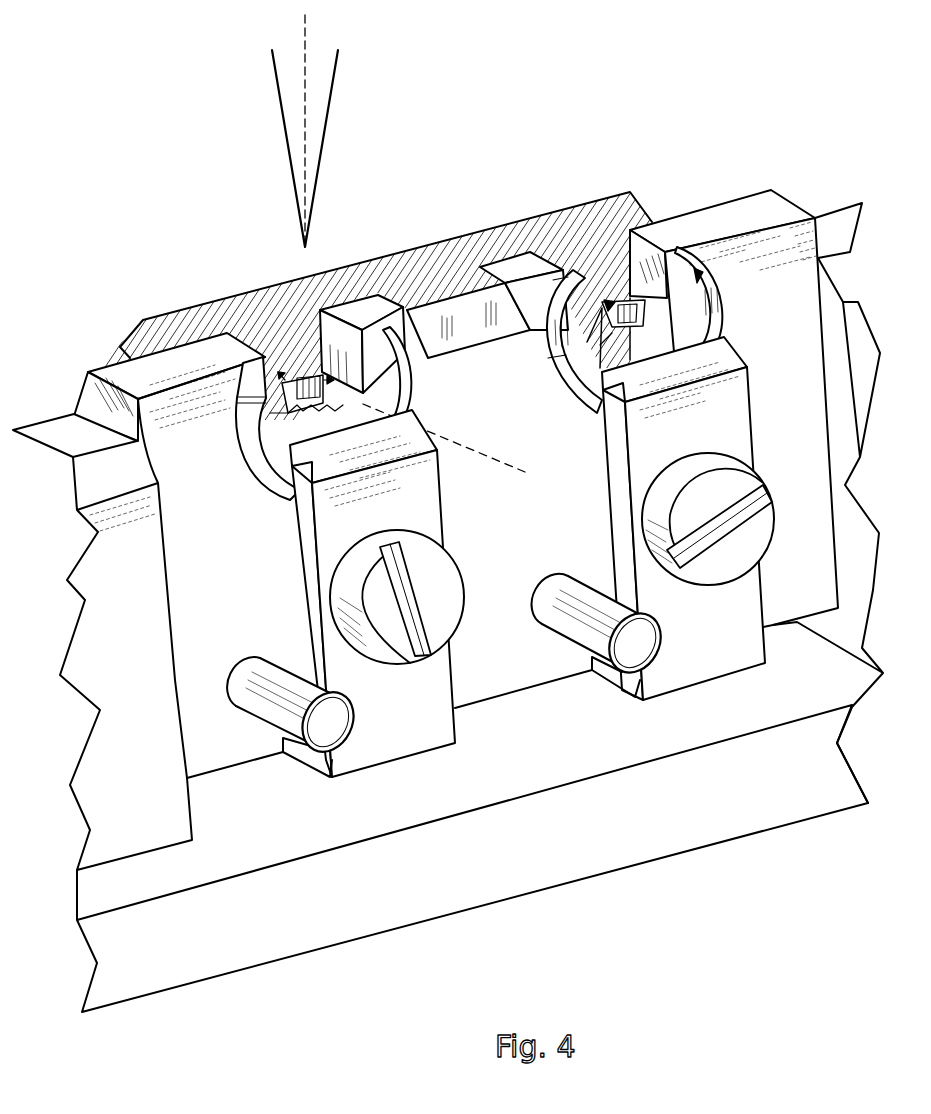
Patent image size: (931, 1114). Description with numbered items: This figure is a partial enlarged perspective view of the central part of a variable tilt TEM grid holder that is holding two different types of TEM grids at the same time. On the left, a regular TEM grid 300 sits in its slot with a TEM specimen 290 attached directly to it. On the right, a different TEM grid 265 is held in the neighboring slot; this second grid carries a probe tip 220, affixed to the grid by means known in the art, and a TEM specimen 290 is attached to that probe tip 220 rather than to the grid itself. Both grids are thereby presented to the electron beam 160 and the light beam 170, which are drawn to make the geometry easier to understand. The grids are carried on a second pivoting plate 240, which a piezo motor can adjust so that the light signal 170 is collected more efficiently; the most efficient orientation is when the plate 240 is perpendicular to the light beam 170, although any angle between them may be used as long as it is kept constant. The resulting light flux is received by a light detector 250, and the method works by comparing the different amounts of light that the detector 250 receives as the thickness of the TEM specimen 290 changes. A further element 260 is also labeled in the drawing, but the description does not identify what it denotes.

The electron beam 160 is at (287, 147).
The light beam 170 is at (452, 470).
The probe tip 220 is at (608, 277).
The second pivoting plate 240 is at (120, 345).
The light detector 250 is at (575, 215).
The support block 260 is at (798, 203).
The second TEM grid 265 is at (692, 290).
The TEM specimen 290 is at (382, 316).
The regular TEM grid 300 is at (241, 430).